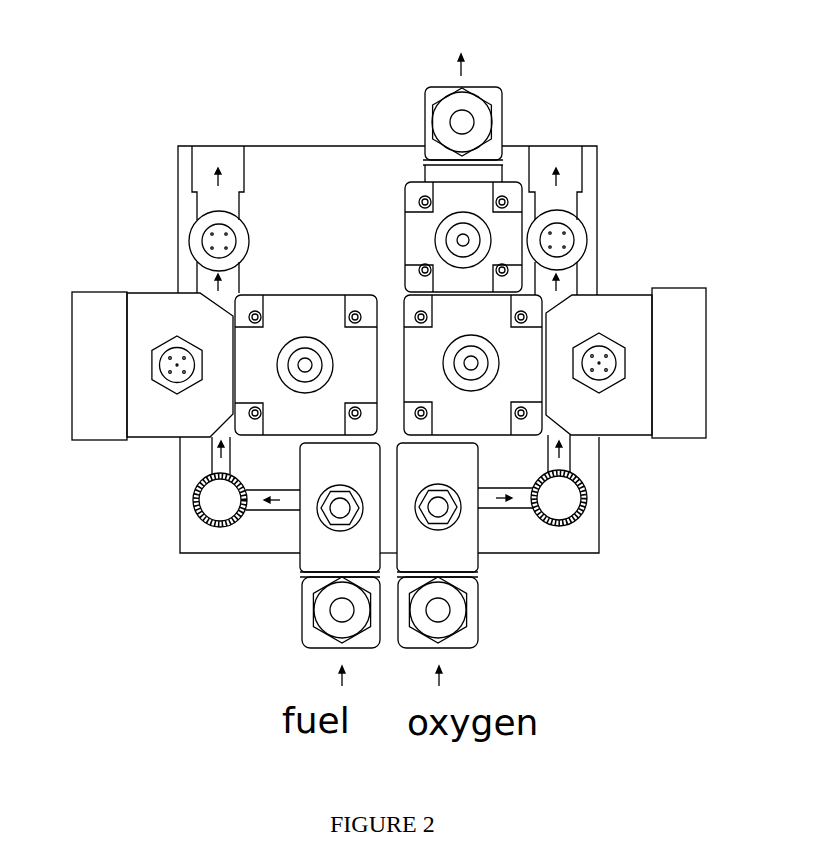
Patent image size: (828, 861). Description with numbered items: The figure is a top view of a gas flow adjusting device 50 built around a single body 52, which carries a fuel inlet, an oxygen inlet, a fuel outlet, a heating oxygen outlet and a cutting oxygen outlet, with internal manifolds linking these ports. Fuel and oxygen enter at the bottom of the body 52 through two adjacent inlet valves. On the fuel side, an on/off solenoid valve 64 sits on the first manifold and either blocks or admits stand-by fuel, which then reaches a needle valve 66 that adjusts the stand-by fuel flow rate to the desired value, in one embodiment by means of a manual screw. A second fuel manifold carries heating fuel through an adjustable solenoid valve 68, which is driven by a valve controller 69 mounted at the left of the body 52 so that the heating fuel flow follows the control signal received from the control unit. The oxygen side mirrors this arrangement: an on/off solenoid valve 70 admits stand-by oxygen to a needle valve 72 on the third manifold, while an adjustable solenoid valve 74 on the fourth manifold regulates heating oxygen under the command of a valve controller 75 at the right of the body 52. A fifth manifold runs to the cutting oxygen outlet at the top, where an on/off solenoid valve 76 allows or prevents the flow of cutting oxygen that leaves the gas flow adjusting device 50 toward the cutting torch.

The gas flow adjusting device 50 is at (152, 124).
The body 52 is at (307, 168).
The on/off solenoid valve 64 is at (332, 550).
The needle valve 66 is at (208, 488).
The adjustable solenoid valve 68 is at (255, 357).
The valve controller 69 is at (155, 313).
The on/off solenoid valve 70 is at (427, 540).
The needle valve 72 is at (566, 495).
The adjustable solenoid valve 74 is at (519, 377).
The valve controller 75 is at (617, 412).
The on/off solenoid valve 76 is at (501, 230).